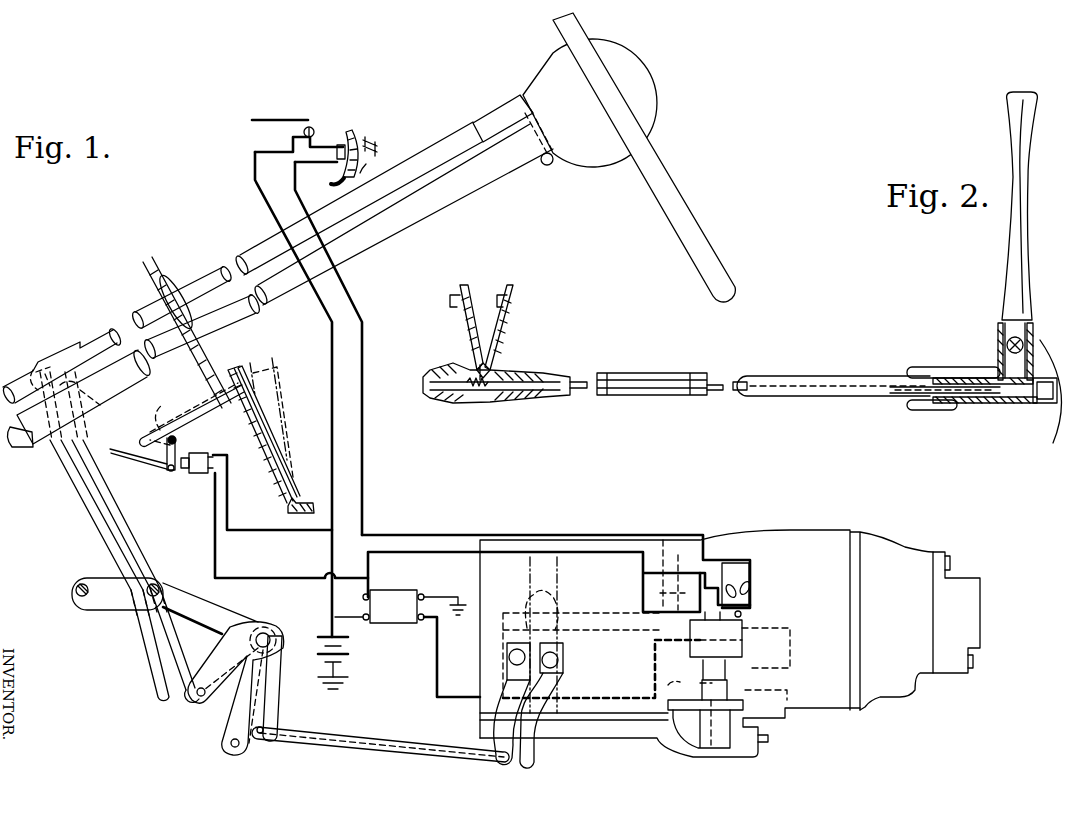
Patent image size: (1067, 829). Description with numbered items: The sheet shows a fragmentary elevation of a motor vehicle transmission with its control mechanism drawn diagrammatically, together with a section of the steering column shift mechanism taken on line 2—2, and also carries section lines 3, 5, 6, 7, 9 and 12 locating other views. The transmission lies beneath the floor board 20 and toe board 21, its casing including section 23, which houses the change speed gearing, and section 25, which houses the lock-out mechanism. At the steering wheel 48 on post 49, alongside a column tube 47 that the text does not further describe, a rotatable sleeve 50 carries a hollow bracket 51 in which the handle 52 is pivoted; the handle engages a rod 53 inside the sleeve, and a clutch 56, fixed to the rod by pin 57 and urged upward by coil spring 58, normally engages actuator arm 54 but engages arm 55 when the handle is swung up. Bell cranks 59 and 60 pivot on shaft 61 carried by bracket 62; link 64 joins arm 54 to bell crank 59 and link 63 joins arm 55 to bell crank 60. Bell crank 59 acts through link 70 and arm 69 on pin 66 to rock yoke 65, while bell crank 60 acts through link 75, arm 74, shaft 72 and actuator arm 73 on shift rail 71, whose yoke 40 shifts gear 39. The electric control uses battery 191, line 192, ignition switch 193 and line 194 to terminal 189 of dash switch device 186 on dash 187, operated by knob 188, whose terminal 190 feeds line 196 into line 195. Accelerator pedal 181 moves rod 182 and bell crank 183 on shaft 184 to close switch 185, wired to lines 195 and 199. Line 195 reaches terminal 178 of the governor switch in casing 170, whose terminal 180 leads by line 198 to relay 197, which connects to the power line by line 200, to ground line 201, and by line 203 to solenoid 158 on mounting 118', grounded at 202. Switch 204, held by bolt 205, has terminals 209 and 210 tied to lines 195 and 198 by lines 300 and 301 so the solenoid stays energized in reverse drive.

In FIG. 1, the section line 2— 2 is at (556, 106).
In FIG. 1, the section line 3— 3 is at (477, 612).
In FIG. 1, the section line 5— 5 is at (530, 507).
In FIG. 1, the section line 6— 6 is at (670, 515).
In FIG. 1, the section line 7— 7 is at (503, 580).
In FIG. 1, the section line 9— 9 is at (913, 613).
In FIG. 1, the section line 12— 12 is at (730, 550).
In FIG. 1, the floor board 20 is at (307, 503).
In FIG. 1, the toe board 21 is at (263, 467).
In FIG. 1, the casing section 23 is at (612, 738).
In FIG. 1, the casing section 25 is at (897, 697).
In FIG. 1, the gear 39 is at (667, 533).
In FIG. 1, the yoke 40 is at (653, 637).
In FIG. 1, the steering column tube 47 is at (207, 280).
In FIG. 1, the steering wheel 48 is at (687, 217).
In FIG. 1, the post 49 is at (448, 202).
In FIG. 2, the post 49 is at (930, 410).
In FIG. 1, the sleeve 50 is at (497, 97).
In FIG. 2, the sleeve 50 is at (797, 382).
In FIG. 2, the hollow bracket 51 is at (993, 368).
In FIG. 1, the handle 52 is at (553, 165).
In FIG. 2, the handle 52 is at (1022, 285).
In FIG. 2, the rod 53 is at (717, 380).
In FIG. 1, the actuator arm 54 is at (87, 403).
In FIG. 2, the actuator arm 54 is at (507, 332).
In FIG. 1, the actuator arm 55 is at (33, 367).
In FIG. 2, the actuator arm 55 is at (460, 323).
In FIG. 2, the clutch 56 is at (500, 358).
In FIG. 2, the pin 57 is at (482, 398).
In FIG. 2, the coil spring 58 is at (450, 397).
In FIG. 1, the bell crank 59 is at (272, 700).
In FIG. 1, the bell crank 60 is at (240, 700).
In FIG. 1, the shaft 61 is at (270, 635).
In FIG. 1, the bracket 62 is at (194, 615).
In FIG. 1, the link 63 is at (80, 487).
In FIG. 1, the link 64 is at (110, 488).
In FIG. 1, the yoke 65 is at (560, 603).
In FIG. 1, the pin 66 is at (560, 662).
In FIG. 1, the arm 69 is at (563, 682).
In FIG. 1, the link 70 is at (340, 733).
In FIG. 1, the shift rail 71 is at (603, 617).
In FIG. 1, the shaft 72 is at (512, 660).
In FIG. 1, the actuator arm 73 is at (507, 637).
In FIG. 1, the arm 74 is at (493, 725).
In FIG. 1, the link 75 is at (300, 750).
In FIG. 1, the mounting 118' is at (790, 698).
In FIG. 1, the solenoid 158 is at (750, 668).
In FIG. 1, the governor and switch casing 170 is at (705, 668).
In FIG. 1, the terminal 178 is at (741, 615).
In FIG. 1, the terminal 180 is at (702, 625).
In FIG. 1, the accelerator pedal 181 is at (280, 447).
In FIG. 1, the rod 182 is at (217, 397).
In FIG. 1, the bell crank 183 is at (178, 458).
In FIG. 1, the shaft 184 is at (177, 440).
In FIG. 1, the switch 185 is at (197, 477).
In FIG. 1, the switch device 186 is at (347, 127).
In FIG. 1, the vehicle dash 187 is at (364, 172).
In FIG. 1, the knob 188 is at (376, 141).
In FIG. 1, the terminal 189 is at (333, 147).
In FIG. 1, the terminal 190 is at (333, 170).
In FIG. 1, the battery 191 is at (342, 664).
In FIG. 1, the conductor line 192 is at (332, 375).
In FIG. 1, the ignition switch 193 is at (304, 132).
In FIG. 1, the conductor line 194 is at (308, 120).
In FIG. 1, the conductor line 195 is at (415, 533).
In FIG. 1, the conductor line 196 is at (368, 440).
In FIG. 1, the relay 197 is at (393, 603).
In FIG. 1, the conductor line 198 is at (440, 553).
In FIG. 1, the conductor line 199 is at (287, 577).
In FIG. 1, the conductor line 200 is at (350, 630).
In FIG. 1, the ground line 201 is at (455, 597).
In FIG. 1, the ground 202 is at (787, 628).
In FIG. 1, the line 203 is at (437, 657).
In FIG. 1, the switch 204 is at (753, 600).
In FIG. 1, the bolt 205 is at (753, 605).
In FIG. 1, the terminal 209 is at (748, 587).
In FIG. 1, the terminal 210 is at (734, 585).
In FIG. 1, the conductor line 300 is at (717, 560).
In FIG. 1, the conductor line 301 is at (660, 596).